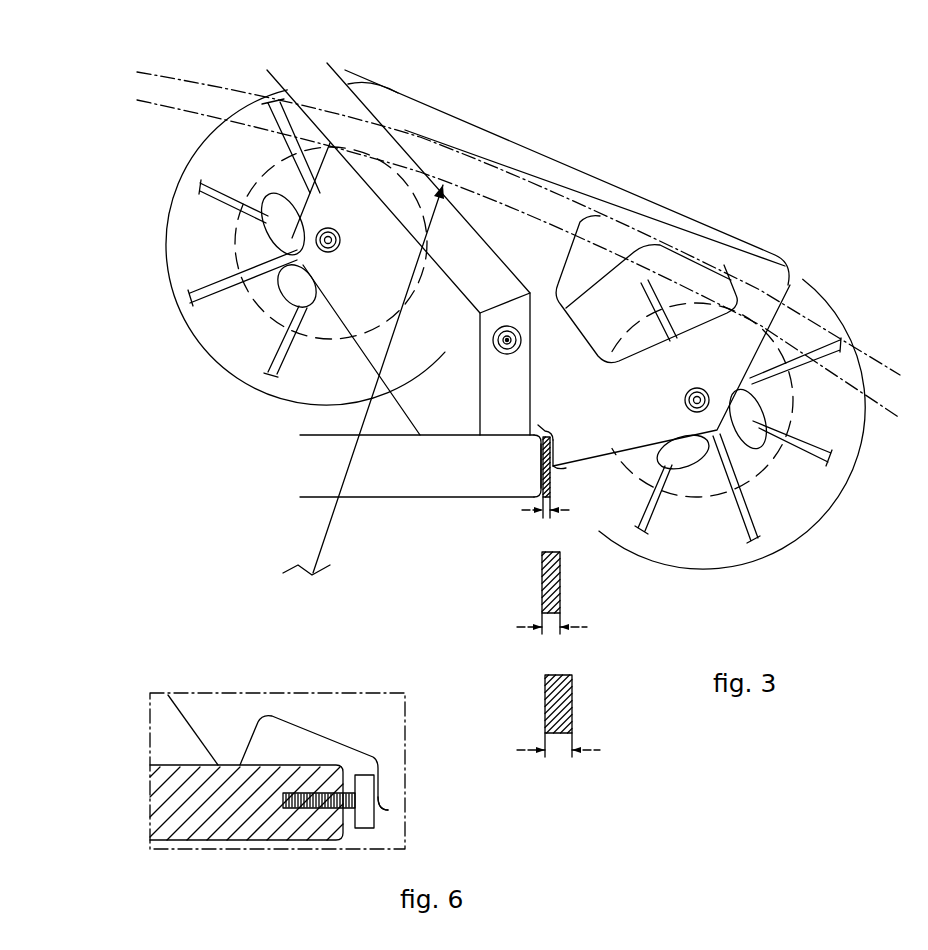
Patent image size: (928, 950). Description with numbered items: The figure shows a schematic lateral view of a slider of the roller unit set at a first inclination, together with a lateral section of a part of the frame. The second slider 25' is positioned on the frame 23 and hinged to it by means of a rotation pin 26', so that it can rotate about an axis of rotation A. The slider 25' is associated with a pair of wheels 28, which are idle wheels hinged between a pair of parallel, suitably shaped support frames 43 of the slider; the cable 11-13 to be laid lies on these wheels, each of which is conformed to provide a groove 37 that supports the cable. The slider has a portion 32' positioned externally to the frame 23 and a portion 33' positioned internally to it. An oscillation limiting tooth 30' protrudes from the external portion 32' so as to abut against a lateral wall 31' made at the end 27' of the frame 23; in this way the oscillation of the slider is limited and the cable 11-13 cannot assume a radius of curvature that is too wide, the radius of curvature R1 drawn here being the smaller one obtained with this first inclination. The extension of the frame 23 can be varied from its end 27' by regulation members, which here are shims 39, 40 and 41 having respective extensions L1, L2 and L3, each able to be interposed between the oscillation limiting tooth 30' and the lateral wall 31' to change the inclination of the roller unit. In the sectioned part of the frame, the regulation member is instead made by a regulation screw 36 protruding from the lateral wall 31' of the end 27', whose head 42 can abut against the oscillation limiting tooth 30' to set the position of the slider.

In FIG. 3, the cable 11-13 is at (208, 86).
In FIG. 3, the wheels 28 is at (158, 229).
In FIG. 3, the groove 37 is at (270, 160).
In FIG. 3, the portion of the slider positioned internally to the frame 33' is at (377, 260).
In FIG. 3, the second slider 25' is at (567, 177).
In FIG. 3, the support frame 43 is at (418, 120).
In FIG. 3, the portion of the slider positioned externally to the frame 32' is at (671, 326).
In FIG. 3, the oscillation limiting tooth 30' is at (585, 500).
In FIG. 6, the oscillation limiting tooth 30' is at (429, 816).
In FIG. 3, the rotation pin 26' is at (512, 320).
In FIG. 3, the axis of rotation A is at (509, 344).
In FIG. 3, the frame 23 is at (378, 503).
In FIG. 6, the frame 23 is at (208, 849).
In FIG. 3, the end of the frame 27' is at (518, 496).
In FIG. 6, the end of the frame 27' is at (246, 836).
In FIG. 3, the lateral wall 31' is at (500, 493).
In FIG. 6, the lateral wall 31' is at (314, 732).
In FIG. 3, the shim 39 is at (553, 462).
In FIG. 3, the extension of the shim L1 is at (545, 531).
In FIG. 3, the shim 40 is at (553, 598).
In FIG. 3, the extension of the shim L2 is at (550, 630).
In FIG. 3, the shim 41 is at (564, 711).
In FIG. 3, the extension of the shim L3 is at (557, 752).
In FIG. 3, the radius of curvature R1 is at (324, 532).
In FIG. 6, the regulation screw 36 is at (392, 838).
In FIG. 6, the head of the regulation screw 42 is at (363, 818).